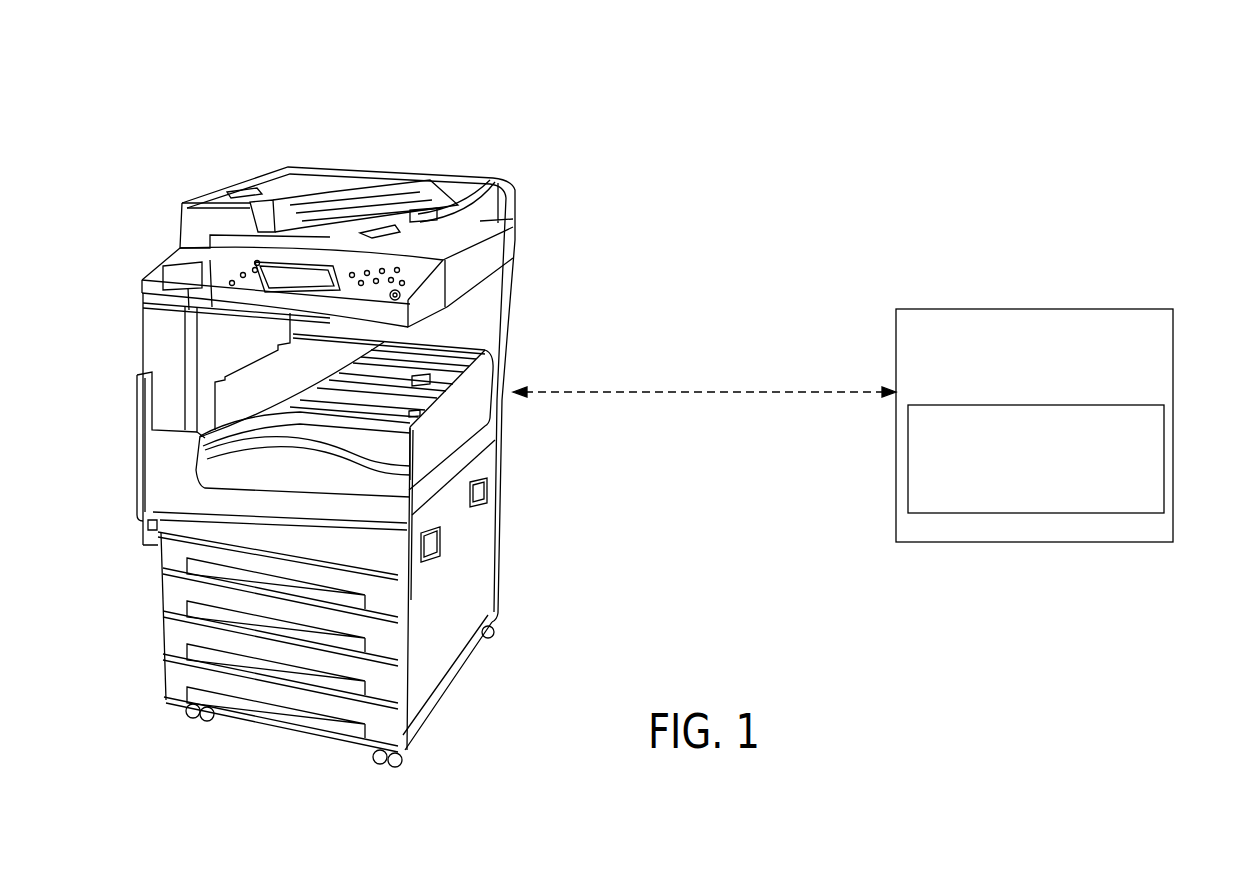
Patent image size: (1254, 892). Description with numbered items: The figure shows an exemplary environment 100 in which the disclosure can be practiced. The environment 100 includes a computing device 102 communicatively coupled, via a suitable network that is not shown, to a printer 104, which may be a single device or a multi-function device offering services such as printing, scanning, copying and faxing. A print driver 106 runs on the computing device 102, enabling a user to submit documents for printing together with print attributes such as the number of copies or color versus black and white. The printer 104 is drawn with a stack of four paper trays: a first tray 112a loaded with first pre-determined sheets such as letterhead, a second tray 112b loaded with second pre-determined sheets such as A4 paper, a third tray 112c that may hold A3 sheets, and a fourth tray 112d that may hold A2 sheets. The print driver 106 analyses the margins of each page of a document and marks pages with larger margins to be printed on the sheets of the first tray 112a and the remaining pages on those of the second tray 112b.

The environment 100 is at (751, 217).
The computing device 102 is at (1097, 309).
The printer 104 is at (308, 432).
The print driver 106 is at (1164, 432).
The first tray 112a is at (180, 549).
The second tray 112b is at (180, 592).
The third tray 112c is at (180, 637).
The fourth tray 112d is at (180, 680).